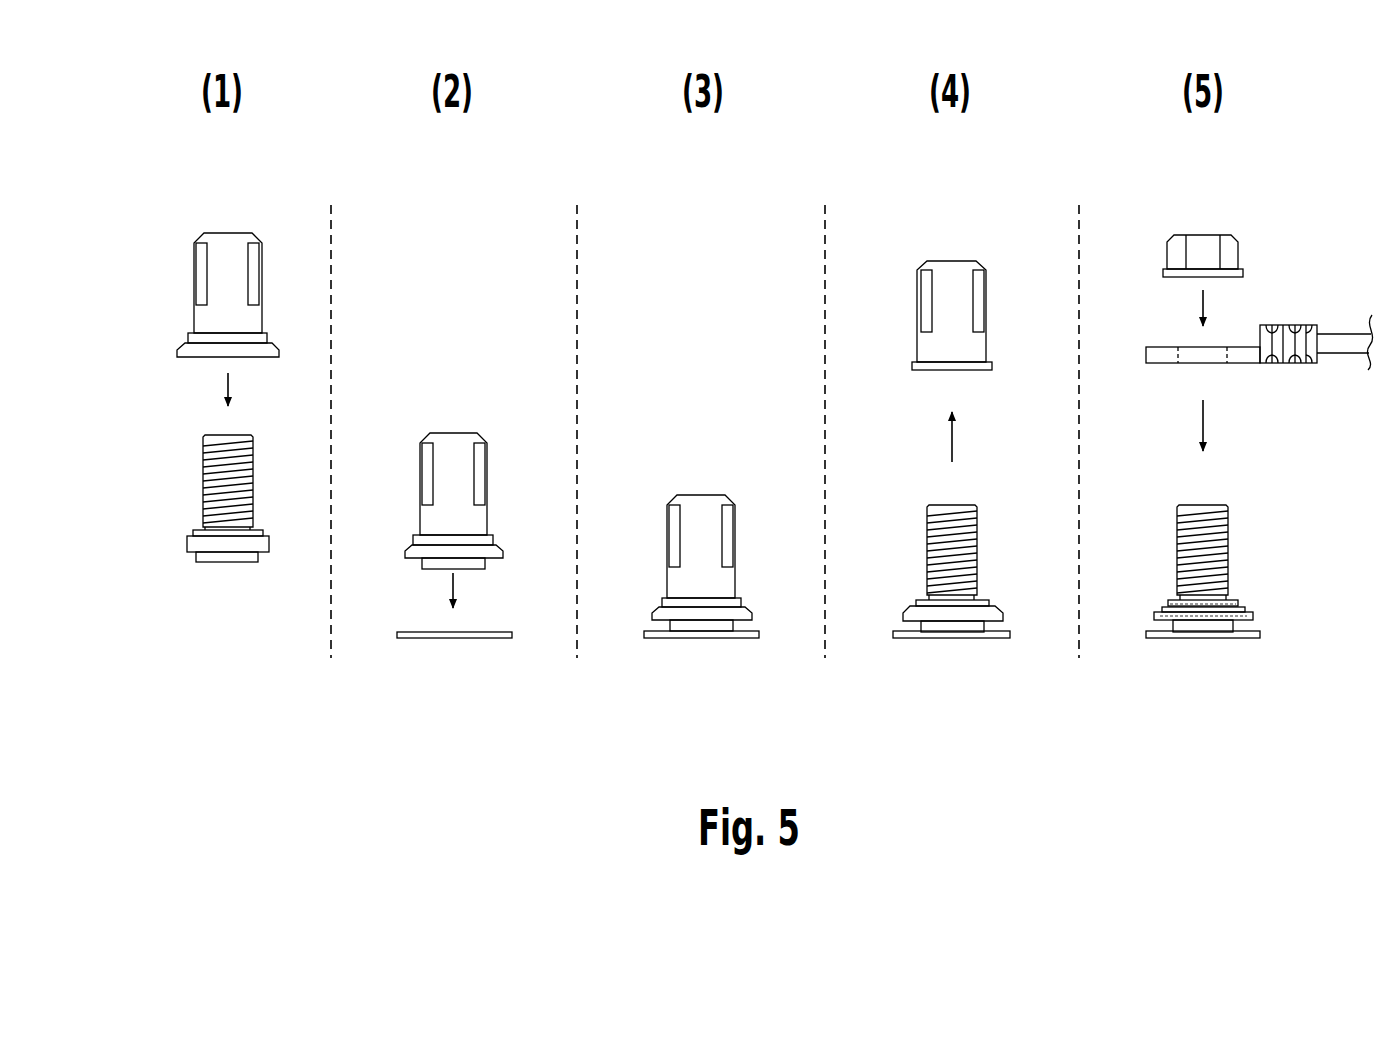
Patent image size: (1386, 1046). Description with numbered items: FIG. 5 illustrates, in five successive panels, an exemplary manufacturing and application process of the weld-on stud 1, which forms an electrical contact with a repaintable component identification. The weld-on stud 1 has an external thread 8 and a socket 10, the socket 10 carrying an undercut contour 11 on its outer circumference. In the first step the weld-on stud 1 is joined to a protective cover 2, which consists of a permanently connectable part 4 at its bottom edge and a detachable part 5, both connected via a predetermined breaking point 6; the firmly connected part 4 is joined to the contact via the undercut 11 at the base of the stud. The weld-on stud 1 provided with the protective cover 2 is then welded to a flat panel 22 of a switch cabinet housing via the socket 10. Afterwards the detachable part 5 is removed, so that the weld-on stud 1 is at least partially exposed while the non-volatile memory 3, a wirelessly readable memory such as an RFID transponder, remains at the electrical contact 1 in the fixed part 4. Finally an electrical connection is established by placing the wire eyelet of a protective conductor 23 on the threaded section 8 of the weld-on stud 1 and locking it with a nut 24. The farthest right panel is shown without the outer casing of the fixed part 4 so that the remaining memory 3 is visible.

The weld-on stud 1 is at (163, 495).
The protective cover 2 is at (158, 242).
The non-volatile memory 3 is at (1242, 610).
The firmly connected part 4 is at (195, 350).
The detachable part 5 is at (226, 257).
The predetermined breaking point 6 is at (188, 338).
The external thread 8 is at (215, 455).
The socket 10 is at (229, 557).
The undercut contour 11 is at (192, 544).
The flat panel 22 is at (453, 640).
The protective conductor 23 is at (1342, 347).
The nut 24 is at (1238, 252).